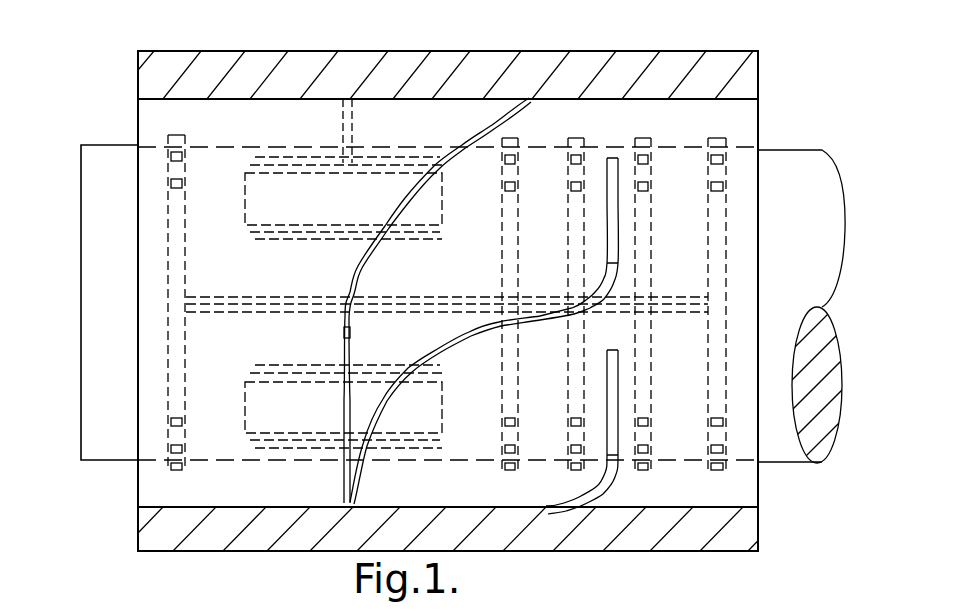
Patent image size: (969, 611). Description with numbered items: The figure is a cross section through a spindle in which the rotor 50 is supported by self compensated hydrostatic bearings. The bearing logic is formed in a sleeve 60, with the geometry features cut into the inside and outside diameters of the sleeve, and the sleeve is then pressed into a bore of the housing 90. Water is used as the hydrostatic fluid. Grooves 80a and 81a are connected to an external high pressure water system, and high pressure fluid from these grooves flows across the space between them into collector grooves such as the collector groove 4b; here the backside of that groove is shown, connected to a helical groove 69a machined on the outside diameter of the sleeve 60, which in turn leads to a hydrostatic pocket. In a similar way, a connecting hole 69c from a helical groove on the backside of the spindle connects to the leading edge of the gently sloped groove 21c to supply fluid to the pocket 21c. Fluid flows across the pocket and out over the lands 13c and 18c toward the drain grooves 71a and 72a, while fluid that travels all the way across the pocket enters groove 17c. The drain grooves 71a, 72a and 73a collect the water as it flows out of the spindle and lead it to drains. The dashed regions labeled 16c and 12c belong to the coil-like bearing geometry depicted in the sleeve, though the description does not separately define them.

The housing 90 is at (142, 70).
The sleeve 60 is at (150, 120).
The rotor 50 is at (98, 175).
The land 13c is at (203, 205).
The drain groove 71a is at (187, 200).
The coil 16c is at (270, 213).
The gently sloped groove (pocket) 21c is at (350, 173).
The coil winding lower layer 12c is at (350, 227).
The groove 17c is at (303, 305).
The connecting hole 69c is at (350, 127).
The land 18c is at (465, 193).
The drain groove 72a is at (520, 205).
The helical groove 69a is at (548, 297).
The collector groove 4b is at (610, 220).
The drain groove 73a is at (733, 200).
The high pressure supply groove 80a is at (645, 385).
The high pressure supply groove 81a is at (578, 395).